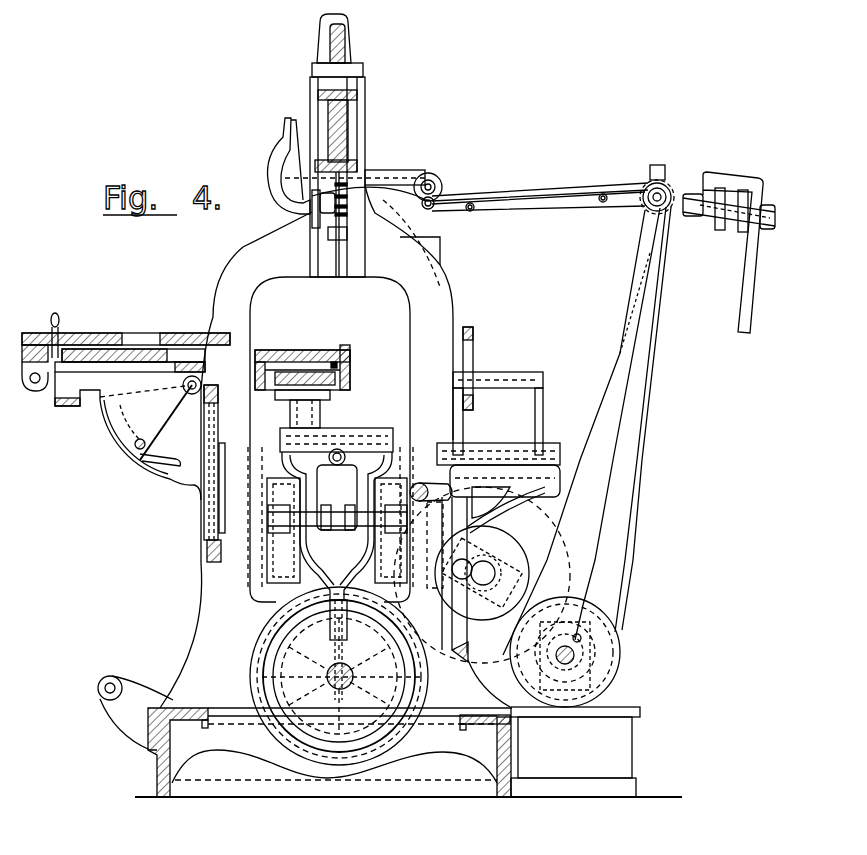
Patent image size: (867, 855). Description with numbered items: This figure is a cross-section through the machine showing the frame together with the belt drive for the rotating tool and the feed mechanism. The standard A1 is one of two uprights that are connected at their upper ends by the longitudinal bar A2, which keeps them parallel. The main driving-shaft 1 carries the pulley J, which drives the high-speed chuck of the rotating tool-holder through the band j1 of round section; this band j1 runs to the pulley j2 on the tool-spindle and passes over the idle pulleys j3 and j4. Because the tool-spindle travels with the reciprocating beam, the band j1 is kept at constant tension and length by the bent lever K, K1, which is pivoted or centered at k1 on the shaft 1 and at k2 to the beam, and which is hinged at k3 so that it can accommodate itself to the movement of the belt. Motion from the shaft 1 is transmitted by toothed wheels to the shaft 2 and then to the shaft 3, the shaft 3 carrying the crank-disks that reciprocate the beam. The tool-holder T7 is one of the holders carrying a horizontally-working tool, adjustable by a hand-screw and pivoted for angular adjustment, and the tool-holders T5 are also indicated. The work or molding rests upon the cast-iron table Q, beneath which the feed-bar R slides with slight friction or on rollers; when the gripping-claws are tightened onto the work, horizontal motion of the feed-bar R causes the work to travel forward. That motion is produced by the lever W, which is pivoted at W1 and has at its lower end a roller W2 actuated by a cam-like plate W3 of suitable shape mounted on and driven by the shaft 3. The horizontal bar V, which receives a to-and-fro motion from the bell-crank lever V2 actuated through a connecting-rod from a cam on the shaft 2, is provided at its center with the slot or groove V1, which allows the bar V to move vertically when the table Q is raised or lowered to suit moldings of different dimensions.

The standard A1 is at (304, 467).
The longitudinal bar A2 is at (350, 52).
The tool-holder T5 is at (347, 233).
The tool-holder T7 is at (172, 345).
The band j1 is at (565, 196).
The pulley j2 is at (398, 170).
The idle pulley j3 is at (442, 185).
The idle pulley j4 is at (646, 203).
The pivot k1 is at (574, 655).
The pivot k2 is at (432, 207).
The hinge k3 is at (668, 186).
The bent lever K is at (740, 265).
The bent lever K1 is at (522, 206).
The pulley J is at (600, 606).
The main driving-shaft 1 is at (580, 638).
The shaft 2 is at (498, 563).
The shaft 3 is at (346, 662).
The table Q is at (290, 352).
The feed-bar R is at (338, 369).
The lever W is at (365, 446).
The pivot W1 is at (300, 530).
The roller W2 is at (339, 676).
The cam-like plate W3 is at (323, 658).
The horizontal bar V is at (474, 333).
The slot V1 is at (472, 364).
The bell-crank lever V2 is at (541, 411).